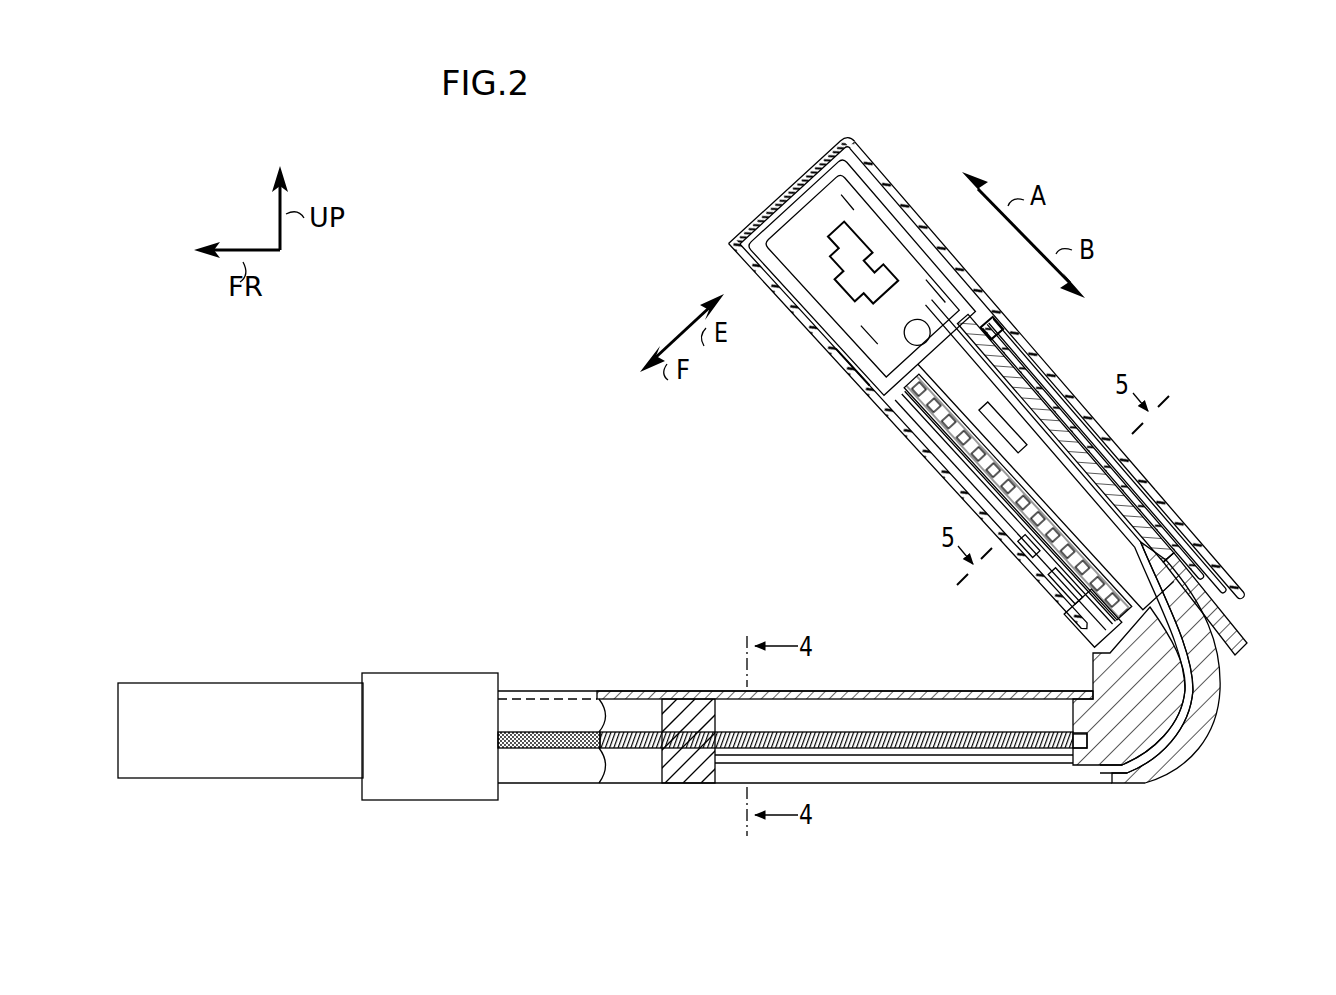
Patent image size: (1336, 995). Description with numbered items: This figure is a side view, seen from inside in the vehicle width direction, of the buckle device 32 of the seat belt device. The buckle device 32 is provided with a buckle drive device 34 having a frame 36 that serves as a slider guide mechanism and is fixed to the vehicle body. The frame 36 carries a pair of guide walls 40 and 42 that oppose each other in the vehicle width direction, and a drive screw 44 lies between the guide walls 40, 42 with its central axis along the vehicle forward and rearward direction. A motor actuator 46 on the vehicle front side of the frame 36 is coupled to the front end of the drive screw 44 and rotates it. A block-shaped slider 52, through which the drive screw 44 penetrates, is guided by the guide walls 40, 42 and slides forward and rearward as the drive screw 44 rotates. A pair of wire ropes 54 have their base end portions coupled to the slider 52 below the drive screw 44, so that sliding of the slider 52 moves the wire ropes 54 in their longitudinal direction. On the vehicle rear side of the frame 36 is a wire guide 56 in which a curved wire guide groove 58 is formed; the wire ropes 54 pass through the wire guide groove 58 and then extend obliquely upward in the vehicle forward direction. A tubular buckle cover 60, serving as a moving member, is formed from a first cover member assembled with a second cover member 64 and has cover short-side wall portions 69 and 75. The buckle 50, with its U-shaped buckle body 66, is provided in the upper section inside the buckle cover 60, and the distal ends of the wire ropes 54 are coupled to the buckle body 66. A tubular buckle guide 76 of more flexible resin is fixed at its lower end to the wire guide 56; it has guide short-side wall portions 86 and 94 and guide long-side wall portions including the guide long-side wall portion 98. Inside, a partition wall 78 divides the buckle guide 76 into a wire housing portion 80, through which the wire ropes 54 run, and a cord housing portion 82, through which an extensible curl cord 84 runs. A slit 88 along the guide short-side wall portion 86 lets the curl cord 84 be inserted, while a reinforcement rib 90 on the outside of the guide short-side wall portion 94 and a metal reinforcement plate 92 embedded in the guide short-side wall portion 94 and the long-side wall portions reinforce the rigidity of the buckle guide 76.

The buckle device 32 is at (593, 320).
The buckle drive device 34 is at (522, 640).
The frame 36 is at (866, 690).
The guide wall 40 is at (545, 783).
The guide wall 42 is at (626, 775).
The drive screw 44 is at (618, 720).
The motor actuator 46 is at (330, 683).
The buckle 50 is at (822, 314).
The slider 52 is at (658, 700).
The wire ropes 54 is at (890, 764).
The wire guide 56 is at (1172, 750).
The wire guide groove 58 is at (1112, 772).
The buckle cover 60 is at (906, 185).
The second cover member 64 is at (848, 378).
The buckle body 66 is at (856, 328).
The cover short-side wall portion 69 is at (1150, 454).
The cover short-side wall portion 75 is at (1010, 560).
The buckle guide 76 is at (1173, 484).
The partition wall 78 is at (1062, 380).
The wire housing portion 80 is at (1040, 604).
The cord housing portion 82 is at (1197, 508).
The curl cord 84 is at (1256, 638).
The guide short-side wall portion 86 is at (1022, 350).
The slit 88 is at (995, 330).
The reinforcement rib 90 is at (912, 438).
The reinforcement plate 92 is at (1068, 598).
The guide short-side wall portion 94 is at (950, 470).
The guide long-side wall portion 98 is at (965, 502).